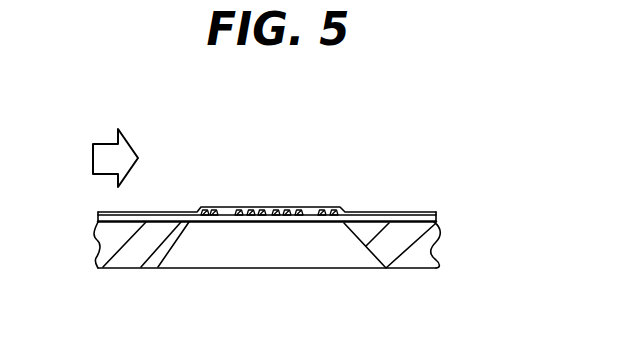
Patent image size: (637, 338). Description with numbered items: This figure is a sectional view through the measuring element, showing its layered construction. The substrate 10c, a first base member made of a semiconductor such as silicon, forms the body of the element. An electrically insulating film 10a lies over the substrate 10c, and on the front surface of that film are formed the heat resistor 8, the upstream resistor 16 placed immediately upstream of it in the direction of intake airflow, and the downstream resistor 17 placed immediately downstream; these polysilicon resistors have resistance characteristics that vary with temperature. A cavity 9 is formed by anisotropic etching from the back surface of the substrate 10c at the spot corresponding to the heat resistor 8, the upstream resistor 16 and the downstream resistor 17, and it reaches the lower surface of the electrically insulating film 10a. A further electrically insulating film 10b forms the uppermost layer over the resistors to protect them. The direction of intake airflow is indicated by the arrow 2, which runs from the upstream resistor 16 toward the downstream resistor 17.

The light 2 is at (100, 154).
The heat resistor 8 is at (277, 207).
The cavity 9 is at (297, 263).
The electrically insulating film 10a is at (437, 221).
The electrically insulating film 10b is at (383, 211).
The substrate 10c is at (423, 249).
The upstream resistor 16 is at (220, 207).
The downstream resistor 17 is at (337, 207).